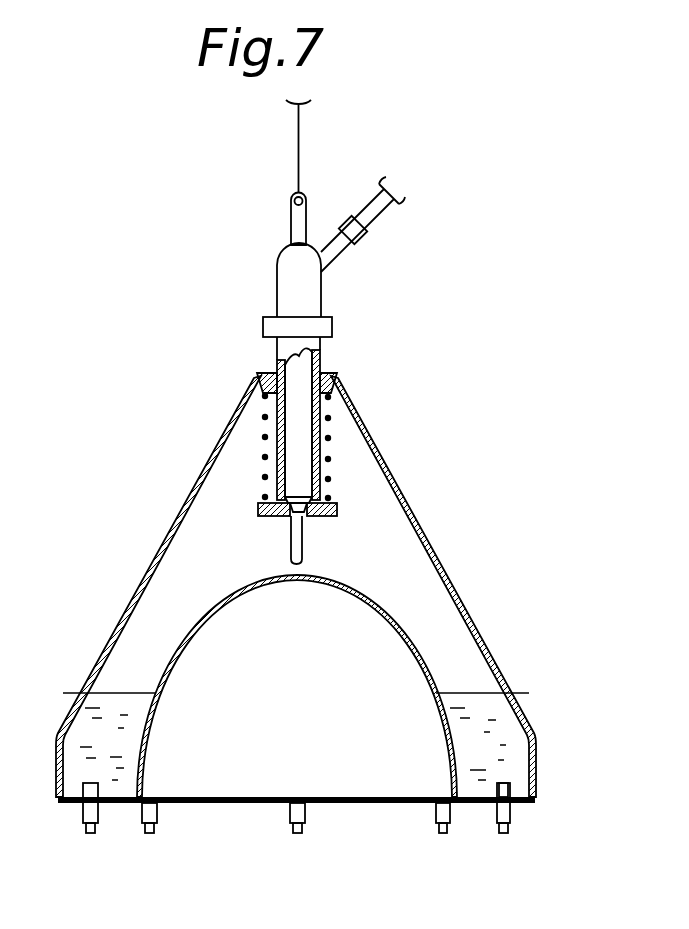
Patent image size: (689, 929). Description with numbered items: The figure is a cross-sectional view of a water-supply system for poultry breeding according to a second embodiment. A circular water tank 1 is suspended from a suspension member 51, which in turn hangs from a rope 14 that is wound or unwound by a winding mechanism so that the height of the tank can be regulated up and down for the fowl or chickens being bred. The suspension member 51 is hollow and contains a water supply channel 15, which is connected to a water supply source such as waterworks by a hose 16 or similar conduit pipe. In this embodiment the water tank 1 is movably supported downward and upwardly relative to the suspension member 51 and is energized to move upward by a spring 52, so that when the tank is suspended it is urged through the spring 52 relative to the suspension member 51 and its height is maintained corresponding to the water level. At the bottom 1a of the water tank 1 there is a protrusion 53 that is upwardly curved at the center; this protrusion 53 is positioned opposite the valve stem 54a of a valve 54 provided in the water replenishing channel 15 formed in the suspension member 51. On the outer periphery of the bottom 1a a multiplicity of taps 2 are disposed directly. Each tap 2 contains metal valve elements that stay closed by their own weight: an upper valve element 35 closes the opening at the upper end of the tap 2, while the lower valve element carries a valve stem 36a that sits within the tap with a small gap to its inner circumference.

The water tank 1 is at (438, 563).
The bottom 1a is at (118, 803).
The tap 2 is at (78, 820).
The rope 14 is at (300, 138).
The water supply channel 15 is at (300, 368).
The hose 16 is at (392, 205).
The upper valve element 35 is at (504, 783).
The valve stem 36a is at (502, 835).
The suspension member 51 is at (276, 283).
The spring 52 is at (333, 438).
The protrusion 53 is at (410, 643).
The valve 54 is at (302, 489).
The valve stem 54a is at (305, 545).